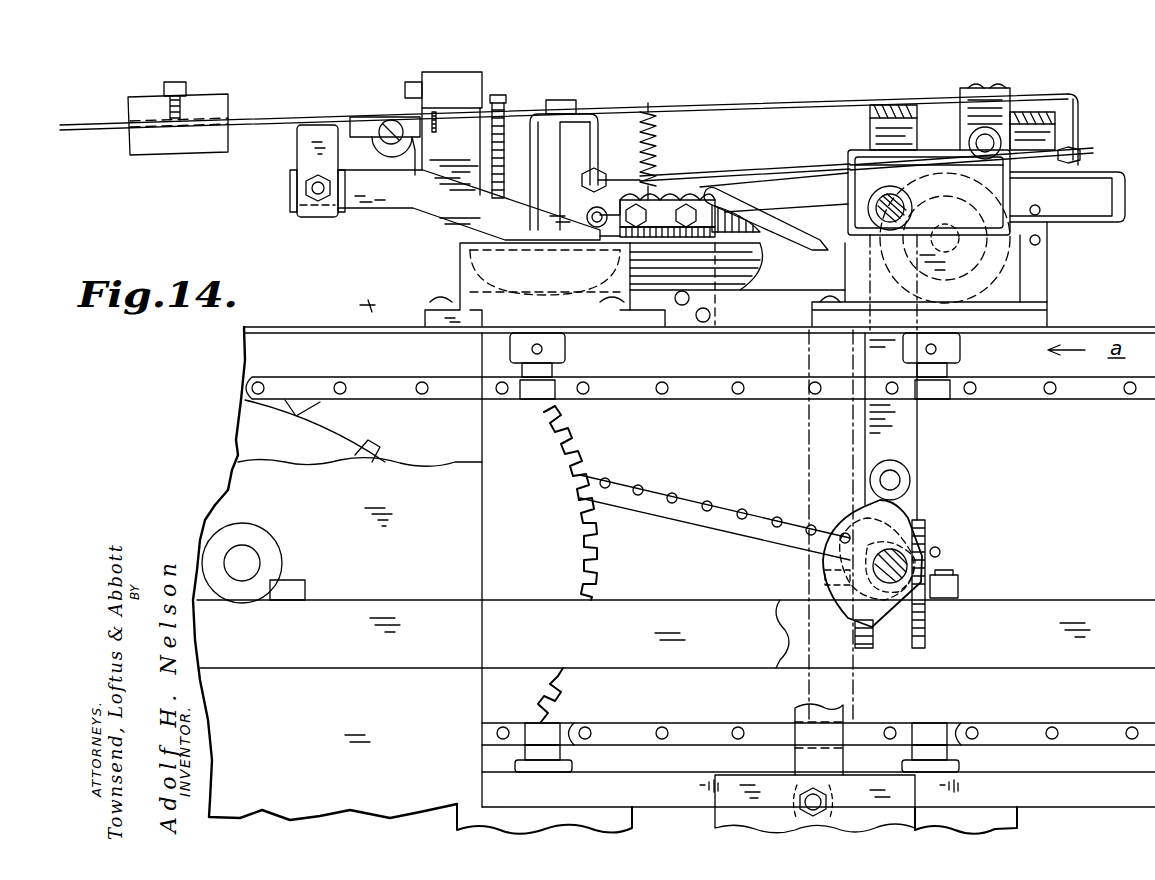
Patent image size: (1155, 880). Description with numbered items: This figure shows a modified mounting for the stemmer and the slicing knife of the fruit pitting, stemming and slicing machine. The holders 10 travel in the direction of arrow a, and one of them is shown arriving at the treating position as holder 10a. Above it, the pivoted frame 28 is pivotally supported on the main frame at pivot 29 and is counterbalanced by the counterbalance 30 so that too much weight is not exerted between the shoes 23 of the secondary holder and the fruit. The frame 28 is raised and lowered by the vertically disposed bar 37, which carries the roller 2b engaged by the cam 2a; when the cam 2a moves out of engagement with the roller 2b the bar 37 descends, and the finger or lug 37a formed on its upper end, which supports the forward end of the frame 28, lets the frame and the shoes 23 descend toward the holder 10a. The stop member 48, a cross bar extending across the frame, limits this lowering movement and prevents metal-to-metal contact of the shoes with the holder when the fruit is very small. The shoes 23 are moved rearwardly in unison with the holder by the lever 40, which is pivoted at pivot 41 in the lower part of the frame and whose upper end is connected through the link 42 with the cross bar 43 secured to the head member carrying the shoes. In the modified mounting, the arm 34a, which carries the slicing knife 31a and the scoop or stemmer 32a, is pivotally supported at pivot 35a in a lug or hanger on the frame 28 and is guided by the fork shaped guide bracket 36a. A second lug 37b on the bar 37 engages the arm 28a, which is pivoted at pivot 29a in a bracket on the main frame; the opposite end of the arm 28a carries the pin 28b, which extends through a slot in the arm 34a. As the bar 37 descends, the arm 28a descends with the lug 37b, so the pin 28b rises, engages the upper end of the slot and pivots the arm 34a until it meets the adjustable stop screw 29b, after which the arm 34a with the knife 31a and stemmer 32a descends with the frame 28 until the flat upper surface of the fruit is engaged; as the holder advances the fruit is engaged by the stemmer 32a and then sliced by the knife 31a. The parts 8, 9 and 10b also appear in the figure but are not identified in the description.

The cam 2a is at (912, 530).
The roller 2b is at (912, 479).
The gear 8 is at (585, 448).
The conveyor chain 9 is at (392, 396).
The holder 10 is at (980, 812).
The holder in treating position 10a is at (1005, 283).
The base block 10b is at (545, 284).
The shoes 23 is at (1105, 225).
The pivoted frame 28 is at (750, 100).
The arm 28a is at (790, 190).
The pin 28b is at (596, 208).
The pivot 29 is at (386, 122).
The pivot 29a is at (692, 195).
The adjustable stop screw 29b is at (500, 130).
The counterbalance 30 is at (205, 102).
The slicing knife 31a is at (760, 285).
The scoop or stemmer 32a is at (795, 190).
The arm 34a is at (458, 212).
The pivot 35a is at (298, 188).
The fork shaped guide bracket 36a is at (562, 128).
The vertically disposed bar 37 is at (898, 430).
The finger or arm 37a is at (885, 105).
The second lug 37b is at (925, 282).
The lever 40 is at (812, 464).
The pivot 41 is at (830, 795).
The link 42 is at (930, 135).
The cross bar 43 is at (985, 143).
The stop member 48 is at (1052, 118).